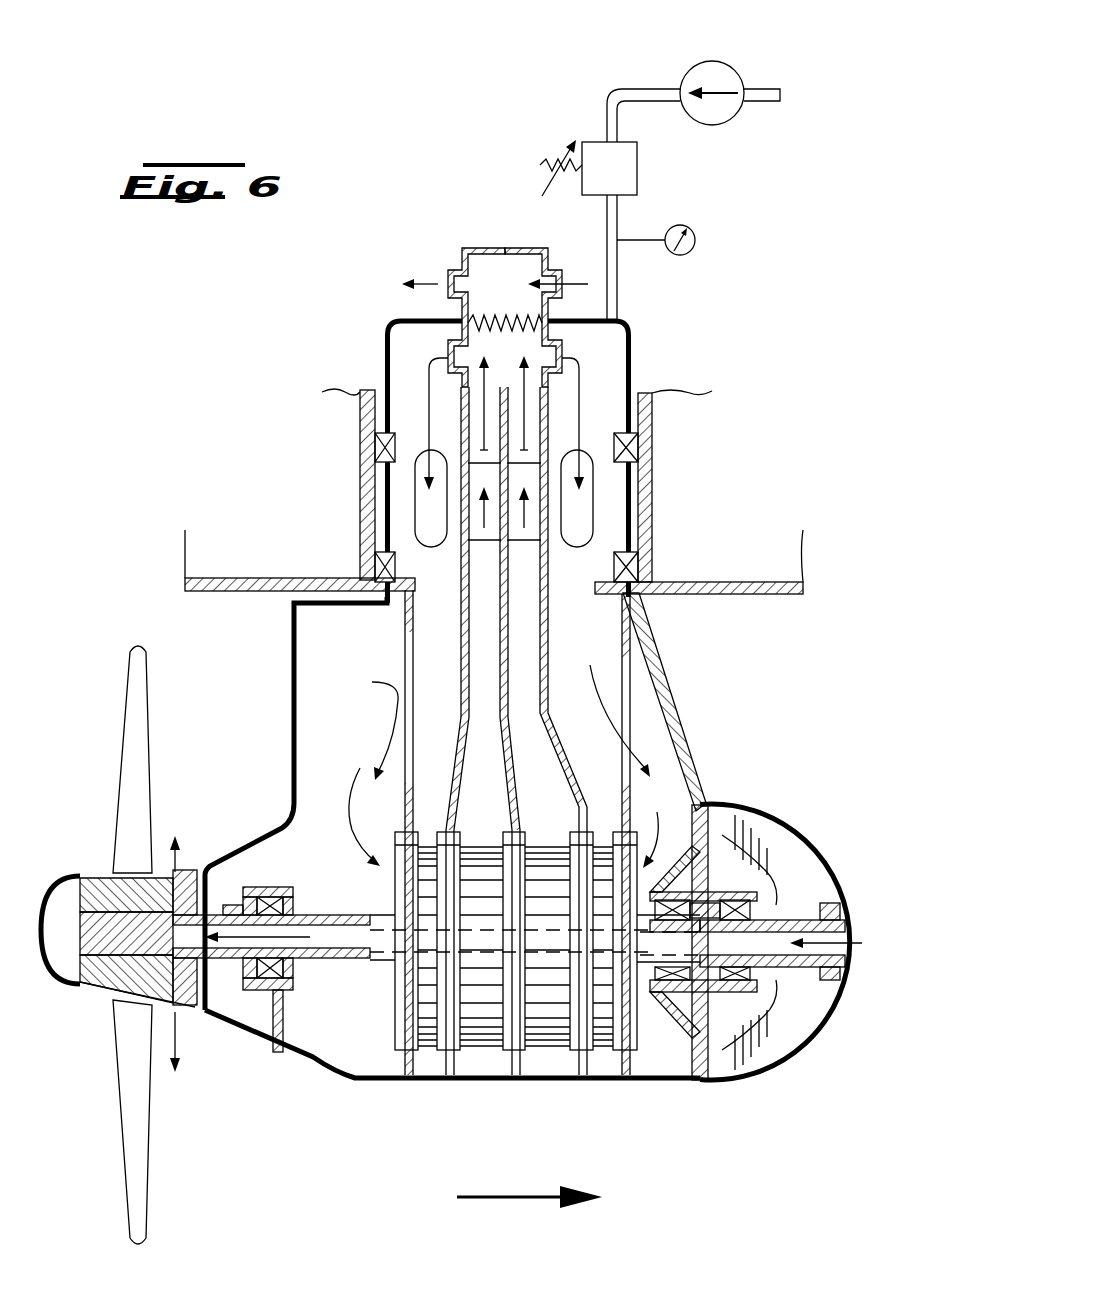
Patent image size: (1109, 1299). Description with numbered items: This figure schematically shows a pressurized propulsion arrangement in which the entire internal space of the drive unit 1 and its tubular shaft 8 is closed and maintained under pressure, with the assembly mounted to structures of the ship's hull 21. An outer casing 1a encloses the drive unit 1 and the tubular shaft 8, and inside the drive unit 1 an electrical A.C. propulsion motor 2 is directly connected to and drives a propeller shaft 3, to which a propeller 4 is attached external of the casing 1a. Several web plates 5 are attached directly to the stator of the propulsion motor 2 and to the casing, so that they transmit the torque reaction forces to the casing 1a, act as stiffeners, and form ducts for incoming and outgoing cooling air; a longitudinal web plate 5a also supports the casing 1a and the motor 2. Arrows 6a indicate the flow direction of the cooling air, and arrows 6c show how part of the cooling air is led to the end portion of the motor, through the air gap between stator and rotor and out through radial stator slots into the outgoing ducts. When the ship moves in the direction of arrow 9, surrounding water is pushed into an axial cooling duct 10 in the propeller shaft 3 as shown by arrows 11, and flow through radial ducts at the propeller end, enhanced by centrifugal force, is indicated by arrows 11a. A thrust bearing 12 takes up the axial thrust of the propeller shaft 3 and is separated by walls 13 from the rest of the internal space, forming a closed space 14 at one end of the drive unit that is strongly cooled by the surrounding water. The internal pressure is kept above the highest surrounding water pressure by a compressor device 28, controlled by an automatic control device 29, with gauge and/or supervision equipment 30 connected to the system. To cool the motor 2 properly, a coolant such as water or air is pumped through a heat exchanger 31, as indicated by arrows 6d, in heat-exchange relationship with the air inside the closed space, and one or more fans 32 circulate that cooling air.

The drive unit 1 is at (330, 1130).
The outer casing 1a is at (648, 1085).
The electrical A.C. propulsion motor 2 is at (540, 1050).
The propeller shaft 3 is at (798, 906).
The propeller 4 is at (136, 733).
The web plates 5 is at (405, 620).
The longitudinal web plate 5a is at (410, 422).
The cooling air flow arrows 6a is at (423, 378).
The cooling air branch arrows 6c is at (358, 845).
The coolant flow arrows 6d is at (434, 272).
The tubular shaft 8 is at (630, 507).
The ship movement direction arrow 9 is at (505, 1195).
The axial cooling duct 10 is at (352, 936).
The water flow arrows 11 is at (848, 940).
The radial duct flow arrows 11a is at (180, 838).
The thrust bearing 12 is at (723, 1086).
The walls 13 is at (696, 1082).
The closed space 14 is at (770, 832).
The ship's hull structures 21 is at (742, 594).
The compressor device 28 is at (708, 72).
The automatic control device 29 is at (622, 172).
The gauge and/or supervision equipment 30 is at (697, 241).
The heat exchanger 31 is at (498, 265).
The fans 32 is at (478, 522).